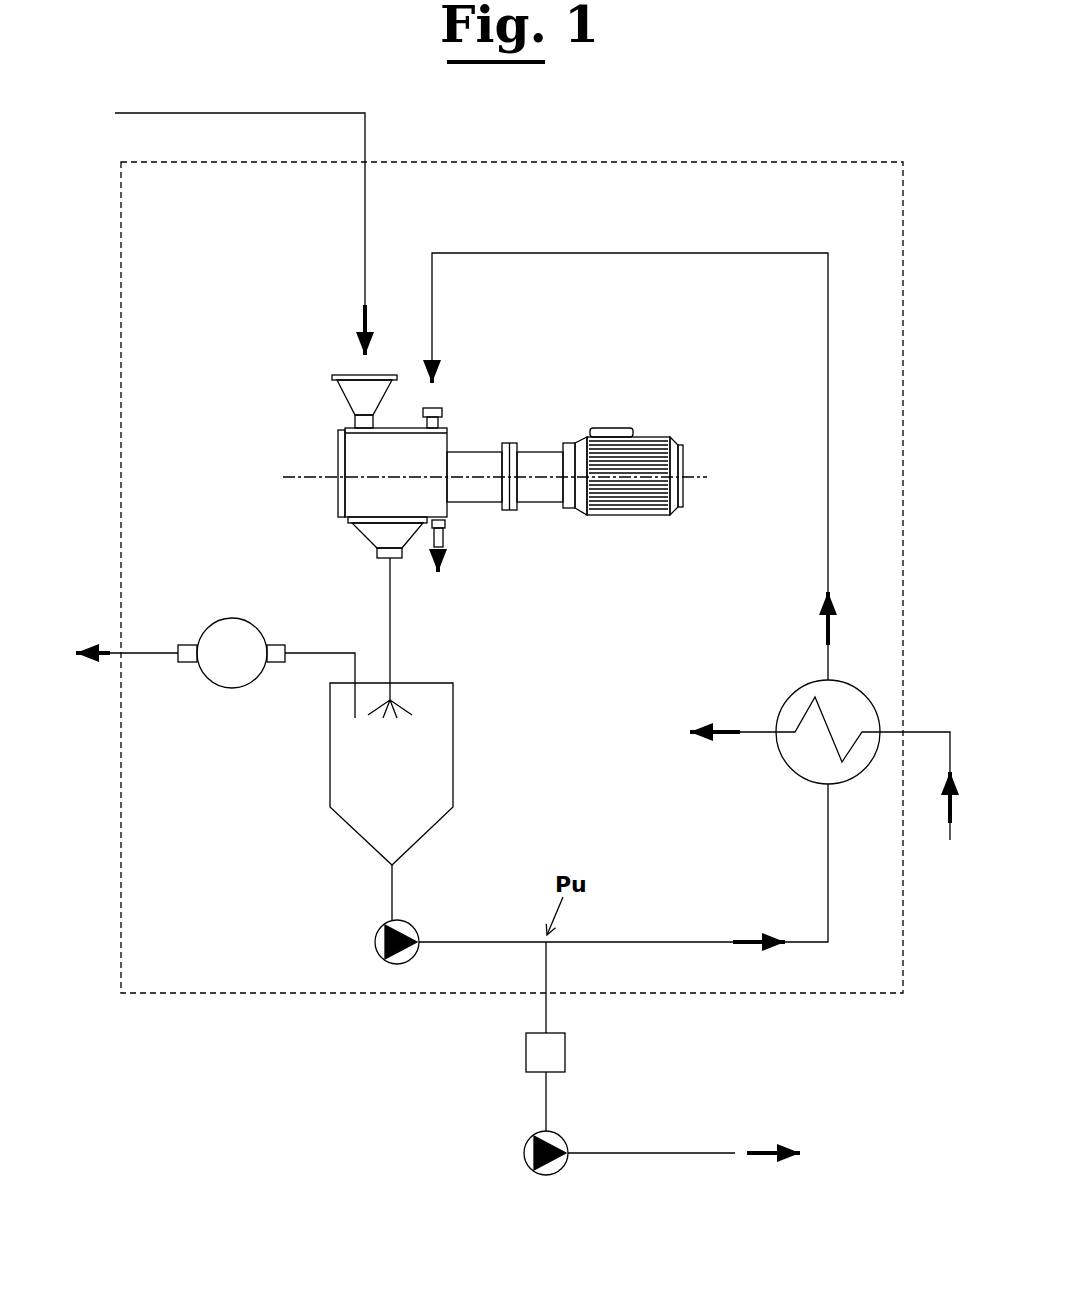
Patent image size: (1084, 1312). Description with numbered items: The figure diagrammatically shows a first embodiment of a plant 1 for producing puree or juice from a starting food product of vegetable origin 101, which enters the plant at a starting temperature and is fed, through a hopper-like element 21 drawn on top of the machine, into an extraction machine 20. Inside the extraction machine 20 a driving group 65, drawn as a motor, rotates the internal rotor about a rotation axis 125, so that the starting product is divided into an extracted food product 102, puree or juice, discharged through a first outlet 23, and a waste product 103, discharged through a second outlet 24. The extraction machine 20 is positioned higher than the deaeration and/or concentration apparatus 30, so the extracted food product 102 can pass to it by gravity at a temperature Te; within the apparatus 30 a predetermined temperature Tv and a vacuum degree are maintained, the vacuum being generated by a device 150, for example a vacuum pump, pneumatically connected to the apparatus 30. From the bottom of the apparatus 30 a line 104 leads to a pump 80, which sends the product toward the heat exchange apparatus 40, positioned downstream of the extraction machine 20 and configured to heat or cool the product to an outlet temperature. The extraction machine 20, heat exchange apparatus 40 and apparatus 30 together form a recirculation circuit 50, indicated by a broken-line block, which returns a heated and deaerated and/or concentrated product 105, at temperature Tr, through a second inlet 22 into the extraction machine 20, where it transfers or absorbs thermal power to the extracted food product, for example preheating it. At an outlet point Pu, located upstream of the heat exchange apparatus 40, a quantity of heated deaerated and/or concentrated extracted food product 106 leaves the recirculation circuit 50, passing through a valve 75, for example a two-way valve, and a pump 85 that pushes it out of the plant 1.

The plant 1 is at (110, 1145).
The extraction machine 20 is at (228, 397).
The feed hopper 21 is at (333, 398).
The second inlet 22 is at (453, 418).
The first outlet 23 is at (360, 543).
The second outlet 24 is at (450, 537).
The deaeration and/or concentration apparatus 30 is at (325, 760).
The heat exchange apparatus 40 is at (768, 697).
The recirculation circuit 50 is at (707, 173).
The driving group 65 is at (687, 420).
The valve 75 is at (572, 1047).
The pump 80 is at (365, 935).
The pump 85 is at (517, 1162).
The starting food product of vegetable origin 101 is at (165, 112).
The extracted food product 102 is at (393, 652).
The waste product 103 is at (452, 562).
The tank outlet line 104 is at (393, 895).
The heated and deaerated and/or concentrated product 105 is at (433, 308).
The heated deaerated and/or concentrated extracted food product 106 is at (647, 1162).
The rotation axis 125 is at (302, 477).
The device for generating a predetermined vacuum degree 150 is at (205, 695).